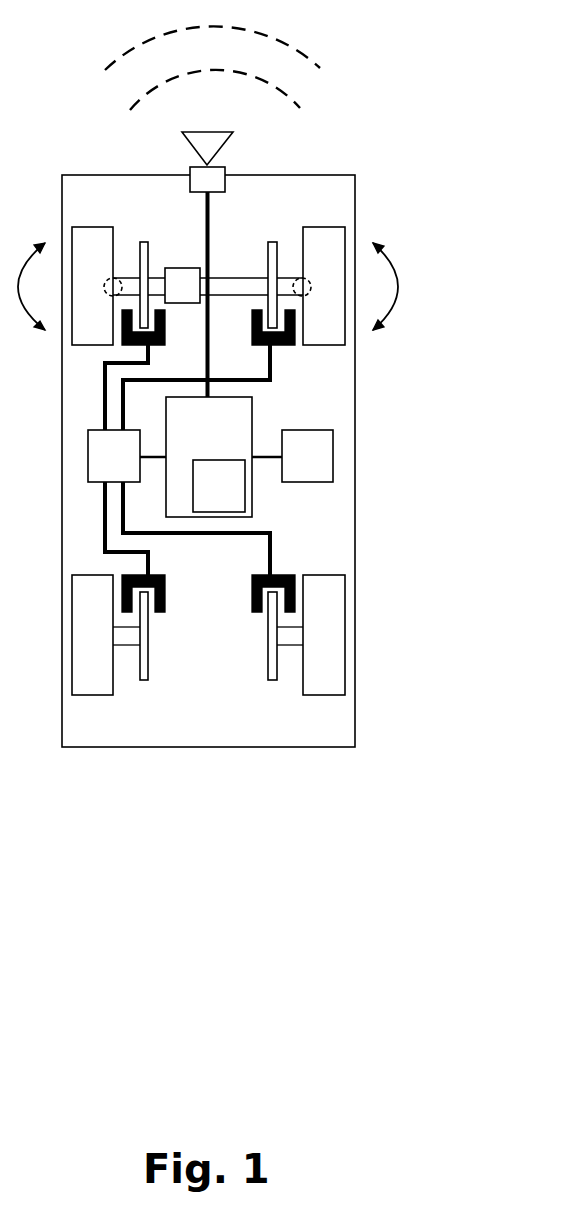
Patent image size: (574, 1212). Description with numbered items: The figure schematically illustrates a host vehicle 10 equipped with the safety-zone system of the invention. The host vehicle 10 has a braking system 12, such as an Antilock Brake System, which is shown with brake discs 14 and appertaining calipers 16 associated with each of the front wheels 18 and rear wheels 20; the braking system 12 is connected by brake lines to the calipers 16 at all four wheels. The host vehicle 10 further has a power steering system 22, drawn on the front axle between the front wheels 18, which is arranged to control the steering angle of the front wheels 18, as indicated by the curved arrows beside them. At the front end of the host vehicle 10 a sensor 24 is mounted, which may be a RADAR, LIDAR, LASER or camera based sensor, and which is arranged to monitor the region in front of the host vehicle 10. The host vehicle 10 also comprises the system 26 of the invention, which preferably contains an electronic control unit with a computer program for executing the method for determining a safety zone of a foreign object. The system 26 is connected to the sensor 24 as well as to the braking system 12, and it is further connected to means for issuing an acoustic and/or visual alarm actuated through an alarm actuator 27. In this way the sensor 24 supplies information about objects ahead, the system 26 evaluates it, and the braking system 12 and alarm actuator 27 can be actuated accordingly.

The host vehicle 10 is at (360, 446).
The braking system 12 is at (127, 472).
The brake discs 14 is at (145, 252).
The calipers 16 is at (165, 340).
The front wheels 18 is at (99, 297).
The rear wheels 20 is at (103, 649).
The power steering system 22 is at (196, 297).
The sensor 24 is at (217, 175).
The system 26 is at (205, 440).
The alarm actuator 27 is at (321, 472).